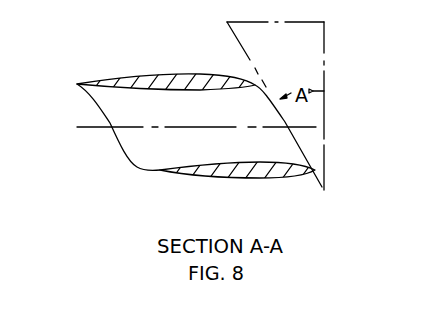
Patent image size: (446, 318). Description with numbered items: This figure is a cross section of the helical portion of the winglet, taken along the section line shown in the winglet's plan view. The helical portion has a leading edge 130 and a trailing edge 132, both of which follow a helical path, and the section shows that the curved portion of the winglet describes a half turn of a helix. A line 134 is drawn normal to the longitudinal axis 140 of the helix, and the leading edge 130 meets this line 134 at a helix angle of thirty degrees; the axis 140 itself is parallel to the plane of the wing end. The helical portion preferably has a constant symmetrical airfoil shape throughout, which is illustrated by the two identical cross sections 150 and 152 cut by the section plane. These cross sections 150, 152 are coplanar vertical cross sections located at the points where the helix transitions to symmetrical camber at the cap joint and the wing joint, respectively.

The leading edge 130 is at (266, 87).
The trailing edge 132 is at (125, 153).
The line normal to the longitudinal axis 134 is at (323, 143).
The longitudinal axis 140 is at (77, 127).
The cross section 150 is at (183, 75).
The cross section 152 is at (303, 180).